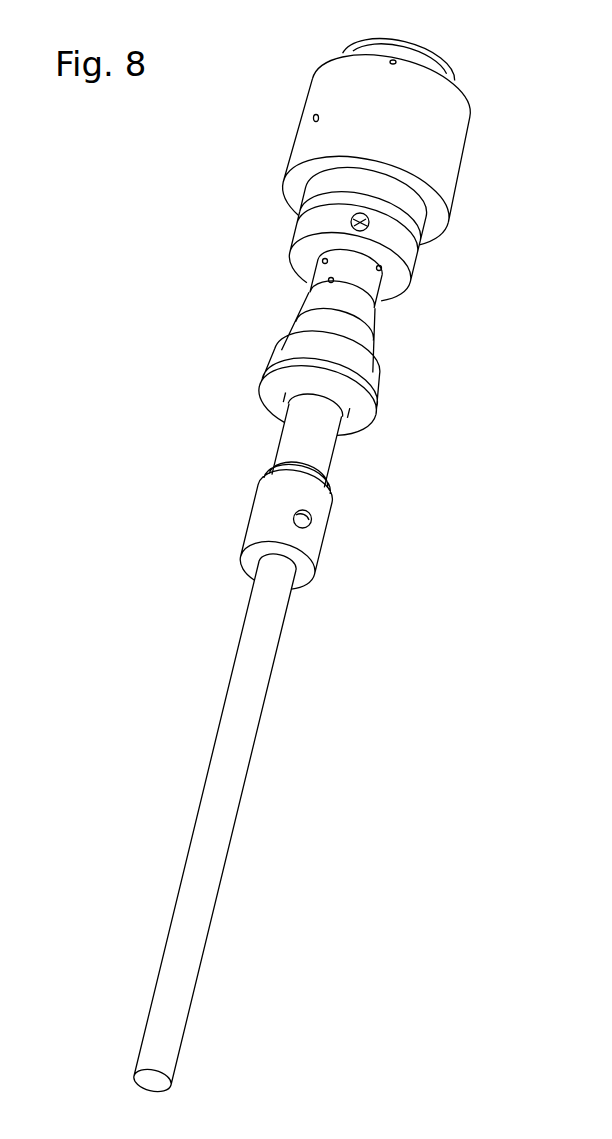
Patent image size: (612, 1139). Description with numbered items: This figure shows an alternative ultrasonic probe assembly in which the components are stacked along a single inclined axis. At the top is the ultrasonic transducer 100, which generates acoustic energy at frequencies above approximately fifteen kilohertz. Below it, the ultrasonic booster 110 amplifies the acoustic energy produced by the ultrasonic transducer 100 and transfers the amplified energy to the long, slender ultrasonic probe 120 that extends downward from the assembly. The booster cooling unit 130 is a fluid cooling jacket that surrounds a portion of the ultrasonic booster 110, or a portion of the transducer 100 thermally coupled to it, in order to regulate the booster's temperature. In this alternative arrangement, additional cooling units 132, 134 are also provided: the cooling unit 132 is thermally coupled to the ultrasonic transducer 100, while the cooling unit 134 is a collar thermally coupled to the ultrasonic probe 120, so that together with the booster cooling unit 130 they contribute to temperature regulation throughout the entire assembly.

The ultrasonic transducer 100 is at (343, 63).
The cooling unit 132 is at (300, 143).
The booster cooling unit 130 is at (297, 233).
The ultrasonic booster 110 is at (290, 327).
The cooling unit 134 is at (256, 506).
The ultrasonic probe 120 is at (240, 642).